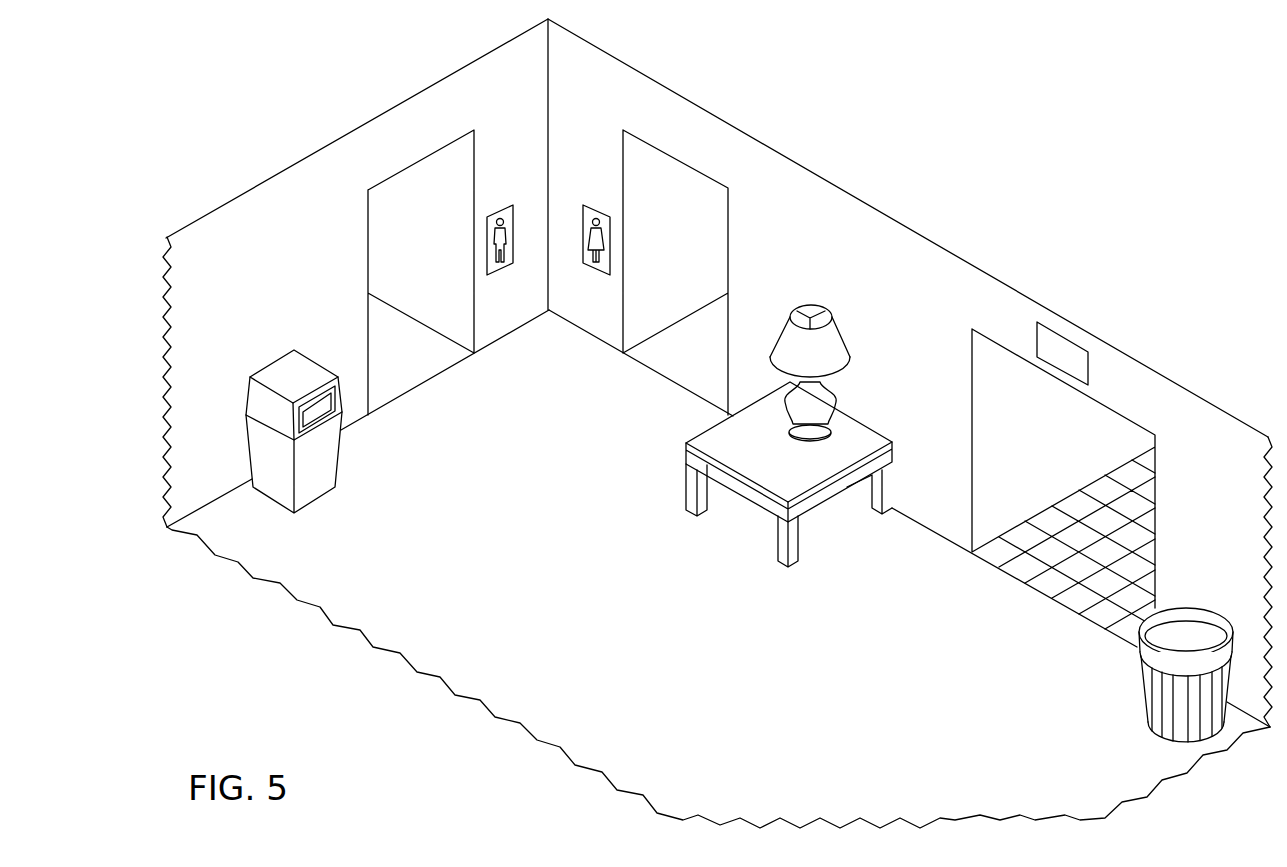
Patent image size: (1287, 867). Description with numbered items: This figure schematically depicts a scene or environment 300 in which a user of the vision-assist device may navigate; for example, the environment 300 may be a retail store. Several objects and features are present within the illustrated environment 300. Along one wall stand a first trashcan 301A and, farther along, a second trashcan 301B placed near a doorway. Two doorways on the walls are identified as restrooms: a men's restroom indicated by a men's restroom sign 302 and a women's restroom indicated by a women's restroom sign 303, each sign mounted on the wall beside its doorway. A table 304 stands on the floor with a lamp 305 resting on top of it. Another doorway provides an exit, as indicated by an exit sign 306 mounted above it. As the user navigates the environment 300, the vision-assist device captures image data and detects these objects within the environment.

The environment 300 is at (717, 423).
The first trashcan 301A is at (277, 370).
The second trashcan 301B is at (1140, 688).
The men's restroom sign 302 is at (507, 192).
The women's restroom sign 303 is at (588, 192).
The table 304 is at (815, 454).
The lamp 305 is at (799, 325).
The exit sign 306 is at (1087, 318).